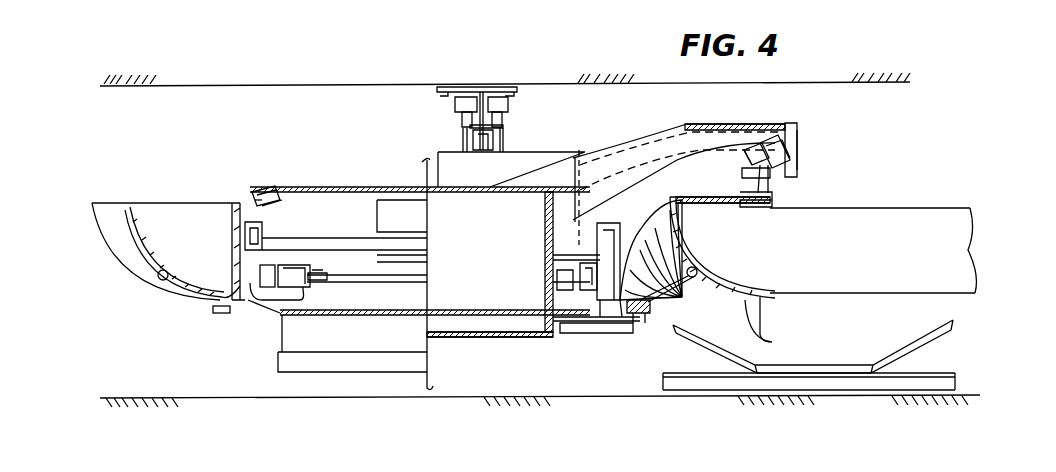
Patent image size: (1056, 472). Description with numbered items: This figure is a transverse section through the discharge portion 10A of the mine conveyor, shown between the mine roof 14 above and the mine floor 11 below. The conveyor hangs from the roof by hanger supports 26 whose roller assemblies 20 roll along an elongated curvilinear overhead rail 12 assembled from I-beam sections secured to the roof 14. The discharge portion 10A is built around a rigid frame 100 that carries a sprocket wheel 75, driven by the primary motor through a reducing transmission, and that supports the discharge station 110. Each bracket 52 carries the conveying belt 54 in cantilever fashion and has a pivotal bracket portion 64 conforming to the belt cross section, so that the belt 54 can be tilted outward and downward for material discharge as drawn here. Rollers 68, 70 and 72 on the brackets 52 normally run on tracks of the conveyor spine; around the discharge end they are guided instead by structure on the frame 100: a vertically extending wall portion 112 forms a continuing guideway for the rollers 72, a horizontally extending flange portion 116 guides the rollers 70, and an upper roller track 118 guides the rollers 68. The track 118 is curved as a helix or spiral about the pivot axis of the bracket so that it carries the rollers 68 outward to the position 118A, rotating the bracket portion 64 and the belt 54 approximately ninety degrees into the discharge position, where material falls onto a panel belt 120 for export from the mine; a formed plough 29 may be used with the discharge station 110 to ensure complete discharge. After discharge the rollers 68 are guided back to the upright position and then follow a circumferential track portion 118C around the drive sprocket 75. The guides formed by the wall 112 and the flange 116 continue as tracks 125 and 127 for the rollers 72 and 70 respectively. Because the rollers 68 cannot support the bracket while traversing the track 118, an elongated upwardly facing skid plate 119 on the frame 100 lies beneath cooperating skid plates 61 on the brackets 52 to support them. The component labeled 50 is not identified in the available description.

The mine roof 14 is at (441, 49).
The floor 11 is at (392, 425).
The overhead rail 12 is at (481, 88).
The roller assemblies 20 is at (505, 126).
The hanger supports 26 is at (505, 142).
The discharge portion 10A is at (428, 152).
The rigid frame 100 is at (514, 202).
The upper roller track 118 is at (628, 158).
The outward position on track 118A is at (778, 176).
The circumferential track portion 118C is at (255, 190).
The support roller 68 is at (270, 190).
The discharge station 110 is at (806, 157).
The sprocket wheel 75 is at (300, 240).
The support rollers 70 is at (268, 278).
The support rollers 72 is at (300, 266).
The track 125 is at (320, 282).
The track 127 is at (268, 300).
The intake hood 50 is at (175, 285).
The wall portion 112 is at (550, 268).
The flange portion 116 is at (596, 285).
The bracket 52 is at (616, 302).
The skid plate 119 is at (643, 316).
The skid plates 61 is at (652, 310).
The belt 54 is at (770, 311).
The pivotal bracket portion 64 is at (765, 335).
The plough 29 is at (968, 260).
The panel belt 120 is at (948, 330).